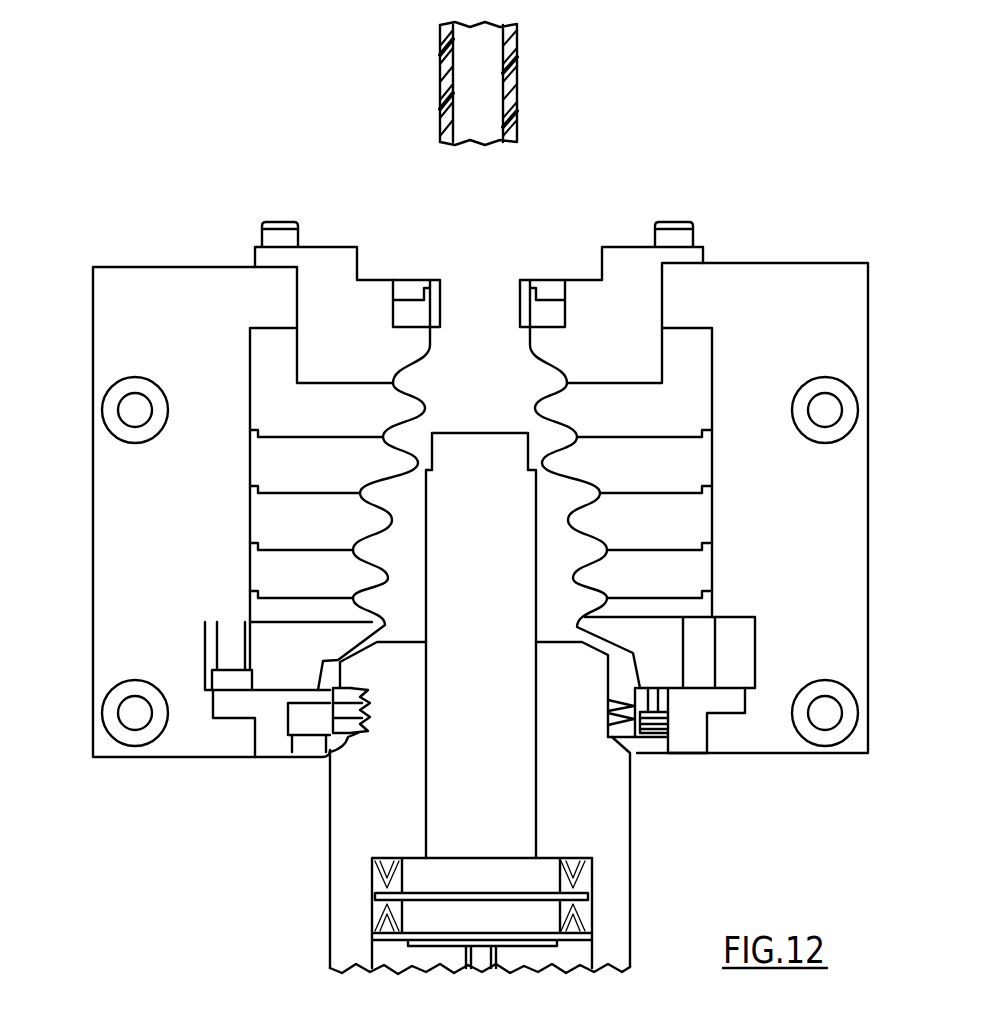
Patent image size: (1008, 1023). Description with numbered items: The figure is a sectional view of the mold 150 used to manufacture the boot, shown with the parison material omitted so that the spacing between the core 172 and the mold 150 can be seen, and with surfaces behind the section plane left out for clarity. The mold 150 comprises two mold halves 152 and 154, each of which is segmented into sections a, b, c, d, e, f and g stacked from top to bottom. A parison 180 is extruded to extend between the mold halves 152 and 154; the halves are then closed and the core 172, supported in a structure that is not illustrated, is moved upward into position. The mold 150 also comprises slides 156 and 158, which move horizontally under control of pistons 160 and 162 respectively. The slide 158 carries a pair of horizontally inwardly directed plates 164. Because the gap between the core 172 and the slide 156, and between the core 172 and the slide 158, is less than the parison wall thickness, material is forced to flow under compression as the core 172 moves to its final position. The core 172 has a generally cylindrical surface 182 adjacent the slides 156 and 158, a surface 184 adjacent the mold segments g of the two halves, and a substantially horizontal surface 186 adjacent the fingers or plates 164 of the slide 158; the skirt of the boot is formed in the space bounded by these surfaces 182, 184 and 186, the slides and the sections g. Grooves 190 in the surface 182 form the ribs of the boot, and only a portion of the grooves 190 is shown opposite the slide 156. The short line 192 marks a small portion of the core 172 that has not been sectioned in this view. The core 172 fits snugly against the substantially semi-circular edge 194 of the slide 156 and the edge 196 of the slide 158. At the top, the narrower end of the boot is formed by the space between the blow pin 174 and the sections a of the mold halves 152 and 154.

The mold 150 is at (228, 215).
The mold half 152 is at (92, 340).
The mold half 154 is at (869, 340).
The slide 156 is at (273, 757).
The slide 158 is at (690, 757).
The piston 160 is at (255, 737).
The piston 162 is at (695, 736).
The plates 164 is at (608, 718).
The core 172 is at (632, 887).
The blow pin 174 is at (538, 580).
The parison 180 is at (517, 82).
The surface 182 is at (368, 697).
The surface 184 is at (362, 650).
The horizontal surface 186 is at (612, 742).
The grooves 190 is at (350, 740).
The line 192 is at (368, 722).
The edge 194 is at (330, 758).
The edge 196 is at (628, 758).
The mold section a is at (307, 297).
The mold section b is at (262, 377).
The mold section c is at (250, 458).
The mold section d is at (250, 515).
The mold section e is at (250, 563).
The mold section f is at (250, 607).
The mold section g is at (250, 641).